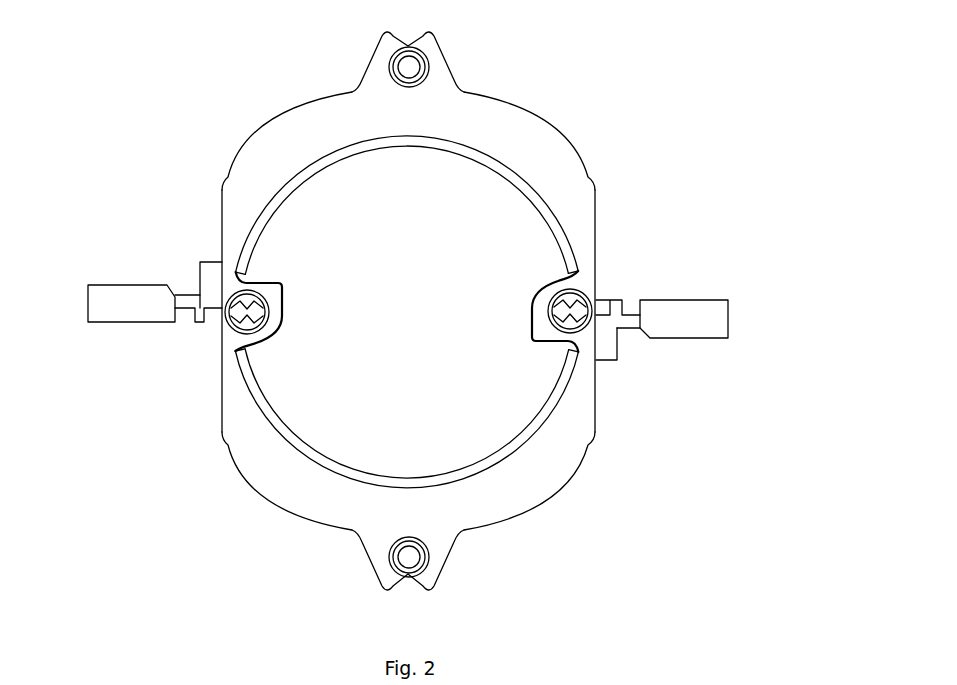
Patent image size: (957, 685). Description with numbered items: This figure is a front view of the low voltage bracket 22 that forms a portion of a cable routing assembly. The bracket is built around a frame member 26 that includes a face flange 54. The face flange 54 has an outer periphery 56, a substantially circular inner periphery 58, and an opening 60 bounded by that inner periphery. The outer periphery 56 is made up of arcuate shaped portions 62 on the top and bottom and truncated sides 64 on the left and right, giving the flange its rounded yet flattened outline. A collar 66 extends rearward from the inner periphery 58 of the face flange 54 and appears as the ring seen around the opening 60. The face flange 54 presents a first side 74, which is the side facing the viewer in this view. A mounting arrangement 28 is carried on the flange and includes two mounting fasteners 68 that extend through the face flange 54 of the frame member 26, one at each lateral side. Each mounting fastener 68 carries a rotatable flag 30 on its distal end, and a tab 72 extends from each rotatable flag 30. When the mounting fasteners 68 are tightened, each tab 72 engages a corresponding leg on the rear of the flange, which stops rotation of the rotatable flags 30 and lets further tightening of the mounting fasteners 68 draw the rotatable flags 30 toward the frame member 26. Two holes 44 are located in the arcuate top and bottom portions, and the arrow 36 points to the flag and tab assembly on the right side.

The low voltage bracket 22 is at (172, 148).
The frame member 26 is at (530, 127).
The mounting arrangement 28 is at (527, 320).
The rotatable flag 30 is at (88, 303).
The connector assembly 36 is at (411, 307).
The mounting hole 44 is at (420, 52).
The face flange 54 is at (406, 306).
The outer periphery 56 is at (575, 468).
The inner periphery 58 is at (255, 388).
The opening 60 is at (475, 385).
The arcuate shaped portions 62 is at (283, 123).
The truncated sides 64 is at (222, 209).
The collar 66 is at (363, 472).
The mounting fasteners 68 is at (238, 328).
The tab 72 is at (212, 268).
The first side 74 is at (487, 505).